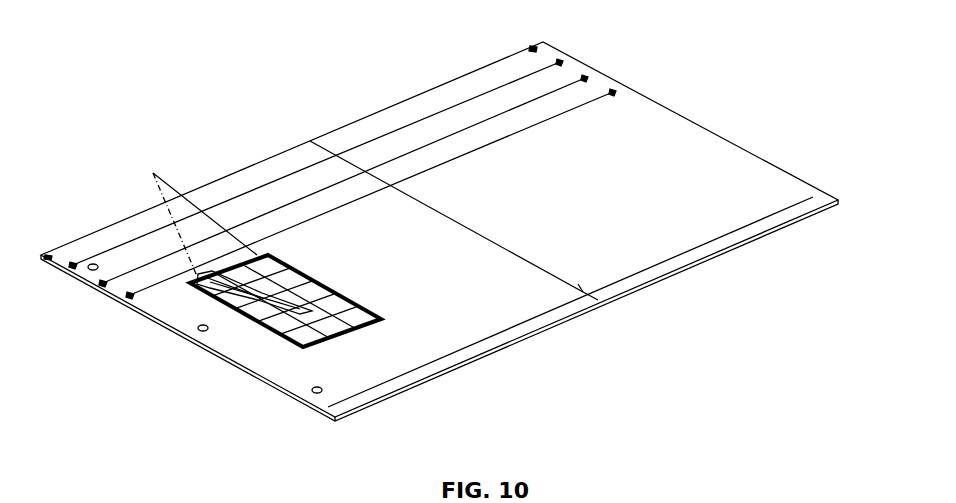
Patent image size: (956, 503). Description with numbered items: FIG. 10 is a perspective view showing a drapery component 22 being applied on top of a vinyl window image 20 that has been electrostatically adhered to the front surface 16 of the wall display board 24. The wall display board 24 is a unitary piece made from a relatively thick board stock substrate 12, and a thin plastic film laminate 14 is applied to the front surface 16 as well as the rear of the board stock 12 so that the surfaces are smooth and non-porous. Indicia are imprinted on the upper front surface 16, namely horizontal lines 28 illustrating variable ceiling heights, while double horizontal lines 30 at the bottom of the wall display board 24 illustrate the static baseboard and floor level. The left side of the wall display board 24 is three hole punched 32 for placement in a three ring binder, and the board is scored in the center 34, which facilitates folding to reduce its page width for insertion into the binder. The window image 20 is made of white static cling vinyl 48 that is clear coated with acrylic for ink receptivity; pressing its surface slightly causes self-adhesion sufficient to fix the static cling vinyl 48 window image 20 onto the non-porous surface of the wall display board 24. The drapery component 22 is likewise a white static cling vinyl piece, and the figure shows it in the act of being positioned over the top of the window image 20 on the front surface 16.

The board stock substrate 12 is at (782, 230).
The thin plastic film laminate 14 is at (682, 132).
The front surface 16 is at (517, 307).
The window image 20 is at (297, 338).
The drapery component 22 is at (215, 297).
The wall display board 24 is at (408, 98).
The horizontal lines 28 is at (559, 62).
The double horizontal lines 30 is at (813, 197).
The three hole punch 32 is at (198, 330).
The center score 34 is at (595, 297).
The white static cling vinyl 48 is at (189, 221).